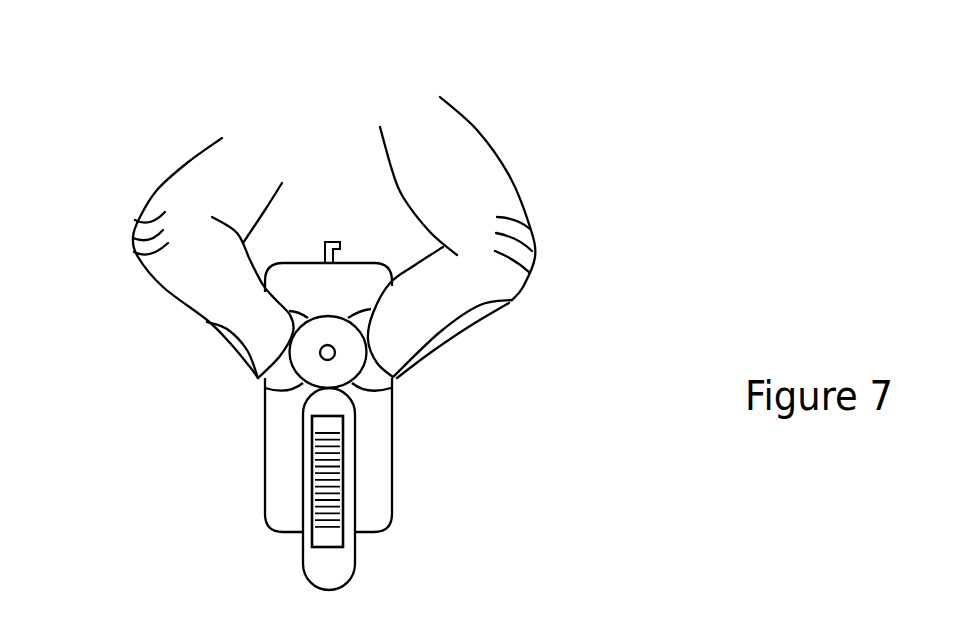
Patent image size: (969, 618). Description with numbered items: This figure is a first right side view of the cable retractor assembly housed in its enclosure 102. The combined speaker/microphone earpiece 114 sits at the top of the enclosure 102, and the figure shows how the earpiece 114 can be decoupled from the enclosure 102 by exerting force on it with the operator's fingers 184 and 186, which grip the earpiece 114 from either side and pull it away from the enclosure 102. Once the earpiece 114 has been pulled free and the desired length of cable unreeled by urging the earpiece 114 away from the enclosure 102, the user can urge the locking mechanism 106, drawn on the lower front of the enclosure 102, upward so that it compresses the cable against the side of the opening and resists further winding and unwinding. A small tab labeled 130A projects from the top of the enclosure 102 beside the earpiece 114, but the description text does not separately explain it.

The enclosure 102 is at (263, 481).
The locking mechanism 106 is at (357, 571).
The combined speaker/microphone earpiece 114 is at (326, 316).
The indicator tab 130A is at (332, 231).
The operator's finger 184 is at (510, 175).
The operator's finger 186 is at (150, 192).